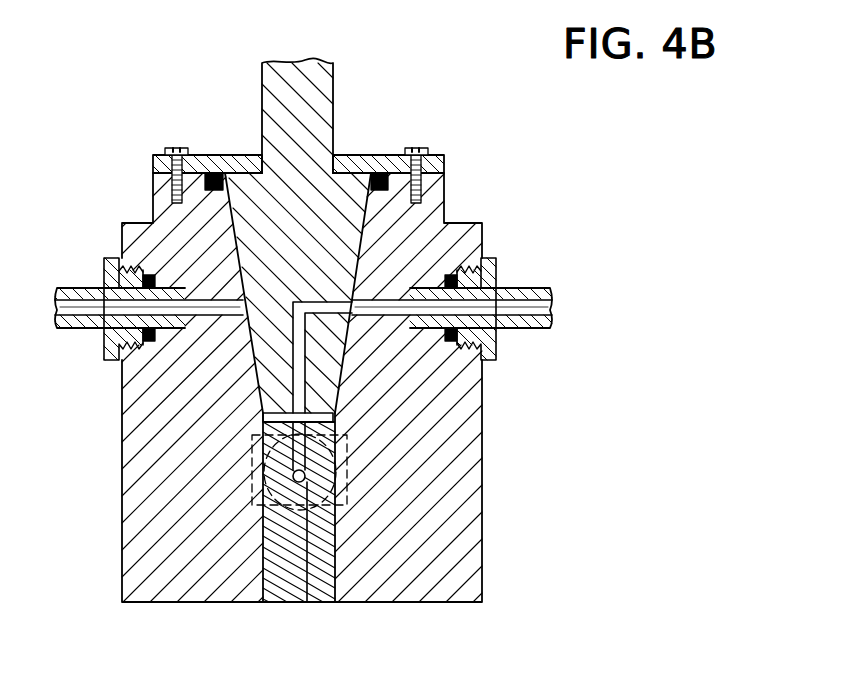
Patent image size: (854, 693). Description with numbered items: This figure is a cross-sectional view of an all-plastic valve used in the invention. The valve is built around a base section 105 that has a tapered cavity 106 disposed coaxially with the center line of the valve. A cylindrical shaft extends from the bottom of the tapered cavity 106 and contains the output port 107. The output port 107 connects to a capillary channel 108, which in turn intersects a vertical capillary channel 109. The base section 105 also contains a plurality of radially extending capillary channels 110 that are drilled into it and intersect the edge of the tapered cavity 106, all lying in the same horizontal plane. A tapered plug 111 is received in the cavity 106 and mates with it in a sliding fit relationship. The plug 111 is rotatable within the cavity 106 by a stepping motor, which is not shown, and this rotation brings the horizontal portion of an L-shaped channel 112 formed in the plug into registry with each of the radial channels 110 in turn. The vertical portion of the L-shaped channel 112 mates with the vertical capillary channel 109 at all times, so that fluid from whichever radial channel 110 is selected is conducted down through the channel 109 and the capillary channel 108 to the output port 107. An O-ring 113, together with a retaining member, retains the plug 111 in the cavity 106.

The base section 105 is at (470, 545).
The tapered cavity 106 is at (343, 375).
The output port 107 is at (282, 515).
The capillary channel 108 is at (307, 602).
The vertical capillary channel 109 is at (312, 445).
The radially extending capillary channels 110 is at (87, 312).
The tapered plug 111 is at (297, 170).
The L-shaped channel 112 is at (322, 305).
The O-ring 113 is at (378, 183).